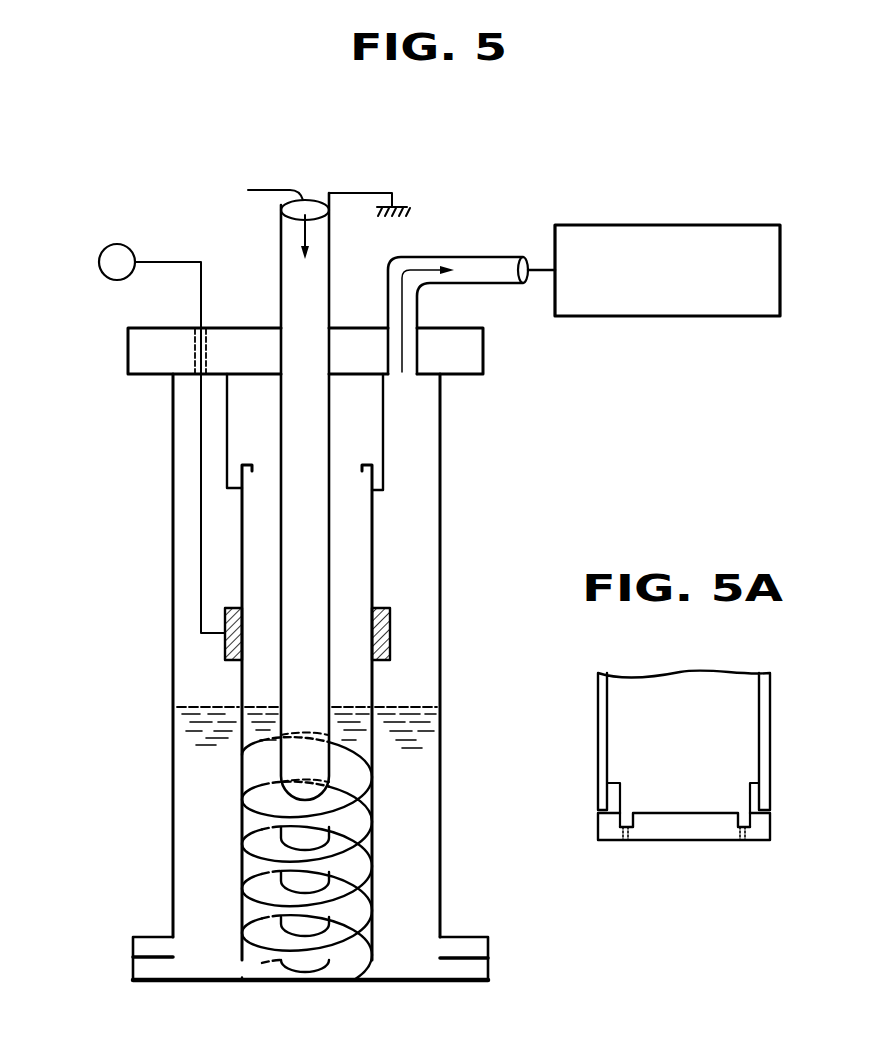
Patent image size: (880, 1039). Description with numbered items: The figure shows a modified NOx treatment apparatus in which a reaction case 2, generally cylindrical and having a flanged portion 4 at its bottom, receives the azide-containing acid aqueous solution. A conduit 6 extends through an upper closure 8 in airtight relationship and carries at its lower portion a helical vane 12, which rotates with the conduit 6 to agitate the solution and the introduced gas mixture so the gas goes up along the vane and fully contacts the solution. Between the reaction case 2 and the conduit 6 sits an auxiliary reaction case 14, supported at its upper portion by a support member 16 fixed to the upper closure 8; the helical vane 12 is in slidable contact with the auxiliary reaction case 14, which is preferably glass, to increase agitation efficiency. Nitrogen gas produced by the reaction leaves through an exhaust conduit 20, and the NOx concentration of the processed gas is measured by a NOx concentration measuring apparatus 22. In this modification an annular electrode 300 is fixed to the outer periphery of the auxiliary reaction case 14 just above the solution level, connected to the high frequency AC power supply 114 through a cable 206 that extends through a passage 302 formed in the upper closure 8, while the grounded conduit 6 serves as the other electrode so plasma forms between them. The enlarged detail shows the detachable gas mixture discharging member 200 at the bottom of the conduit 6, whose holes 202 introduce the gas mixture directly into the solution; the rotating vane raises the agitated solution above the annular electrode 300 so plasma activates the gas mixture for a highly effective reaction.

In FIG. 5, the reaction case 2 is at (440, 656).
In FIG. 5, the flanged portion 4 is at (478, 947).
In FIG. 5, the conduit 6 is at (329, 260).
In FIG. 5A, the conduit 6 is at (770, 735).
In FIG. 5, the upper closure 8 is at (468, 357).
In FIG. 5, the helical vane 12 is at (255, 817).
In FIG. 5, the auxiliary reaction case 14 is at (242, 527).
In FIG. 5, the support member 16 is at (227, 433).
In FIG. 5, the exhaust conduit 20 is at (474, 257).
In FIG. 5, the NOx concentration measuring apparatus 22 is at (655, 225).
In FIG. 5, the high frequency AC power supply 114 is at (117, 244).
In FIG. 5, the cable 206 is at (201, 283).
In FIG. 5, the annular electrode 300 is at (225, 646).
In FIG. 5, the passage 302 is at (206, 327).
In FIG. 5A, the gas mixture discharging member 200 is at (770, 830).
In FIG. 5A, the holes 202 is at (745, 840).